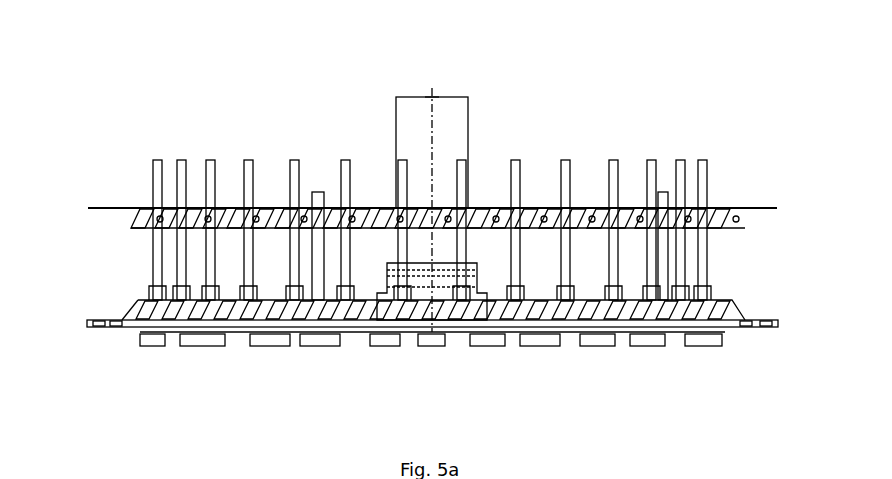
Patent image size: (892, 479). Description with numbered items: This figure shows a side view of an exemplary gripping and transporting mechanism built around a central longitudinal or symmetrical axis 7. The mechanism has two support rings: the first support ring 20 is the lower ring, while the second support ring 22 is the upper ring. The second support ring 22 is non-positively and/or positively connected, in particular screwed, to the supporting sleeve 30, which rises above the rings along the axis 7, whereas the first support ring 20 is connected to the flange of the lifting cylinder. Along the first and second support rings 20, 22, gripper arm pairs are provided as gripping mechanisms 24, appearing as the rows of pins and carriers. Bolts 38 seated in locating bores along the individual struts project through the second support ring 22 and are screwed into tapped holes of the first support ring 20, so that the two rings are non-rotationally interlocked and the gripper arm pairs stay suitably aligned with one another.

The longitudinal axis 7 is at (430, 108).
The first support ring 20 is at (366, 322).
The second support ring 22 is at (497, 207).
The gripping mechanisms 24 is at (108, 345).
The supporting sleeve 30 is at (408, 122).
The bolts 38 is at (320, 242).